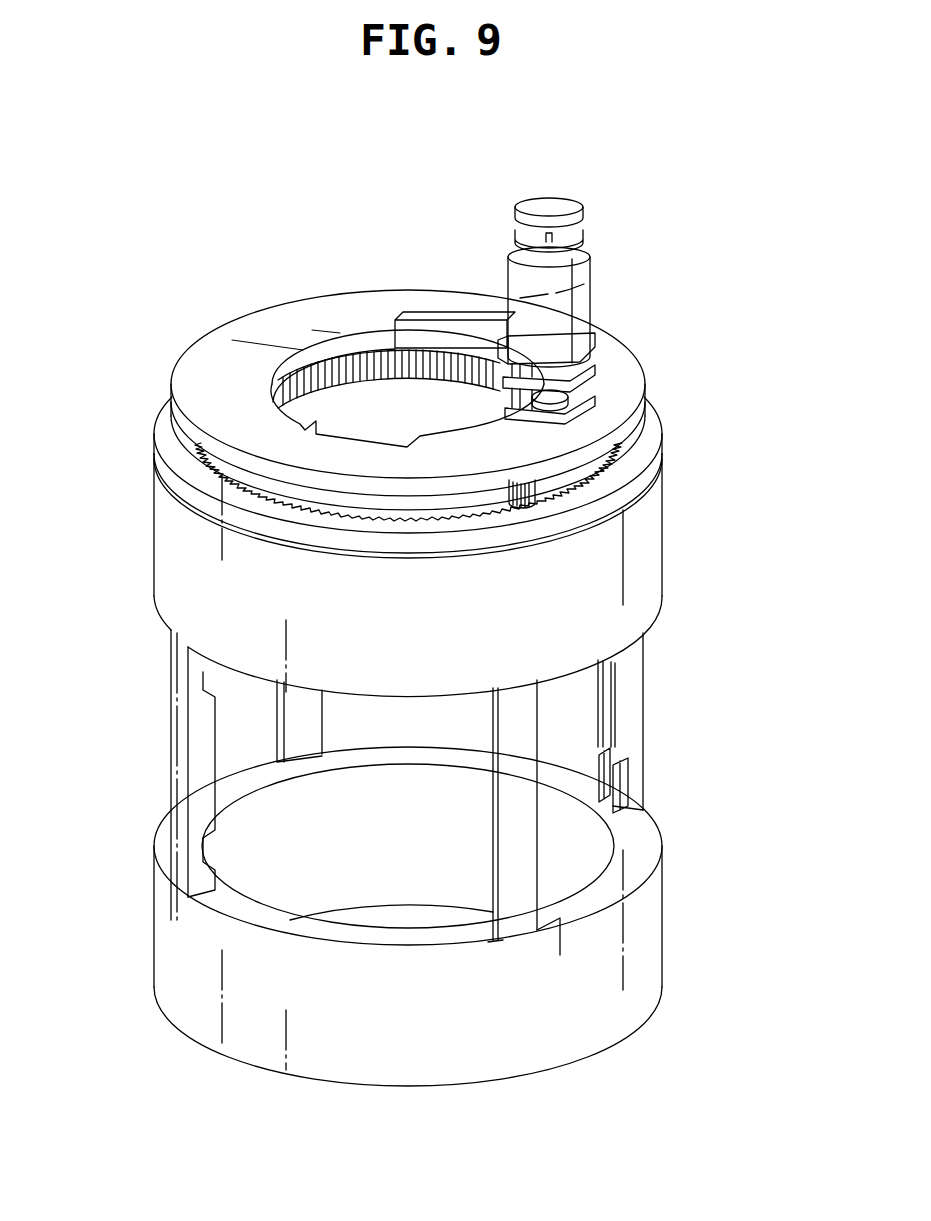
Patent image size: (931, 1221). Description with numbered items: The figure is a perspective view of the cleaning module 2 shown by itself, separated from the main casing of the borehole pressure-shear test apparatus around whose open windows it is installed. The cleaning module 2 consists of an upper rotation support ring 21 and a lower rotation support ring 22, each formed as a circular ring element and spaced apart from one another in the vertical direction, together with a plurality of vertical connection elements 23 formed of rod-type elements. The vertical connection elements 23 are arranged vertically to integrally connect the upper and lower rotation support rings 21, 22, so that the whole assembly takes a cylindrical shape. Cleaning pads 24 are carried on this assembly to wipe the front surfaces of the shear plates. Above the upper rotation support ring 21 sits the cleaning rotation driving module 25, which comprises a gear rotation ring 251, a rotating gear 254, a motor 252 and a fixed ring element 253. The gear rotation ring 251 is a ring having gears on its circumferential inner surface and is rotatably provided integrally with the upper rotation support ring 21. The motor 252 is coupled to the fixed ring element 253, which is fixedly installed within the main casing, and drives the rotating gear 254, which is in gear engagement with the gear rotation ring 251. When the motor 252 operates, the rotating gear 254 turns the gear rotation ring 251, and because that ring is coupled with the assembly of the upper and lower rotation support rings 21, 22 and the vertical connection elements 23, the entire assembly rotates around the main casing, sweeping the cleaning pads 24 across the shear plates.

The cleaning module 2 is at (155, 301).
The upper rotation support ring 21 is at (633, 578).
The lower rotation support ring 22 is at (632, 938).
The vertical connection elements 23 is at (633, 680).
The cleaning pads 24 is at (615, 748).
The cleaning rotation driving module 25 is at (757, 297).
The gear rotation ring 251 is at (607, 500).
The motor 252 is at (580, 310).
The fixed ring element 253 is at (627, 382).
The rotating gear 254 is at (640, 462).